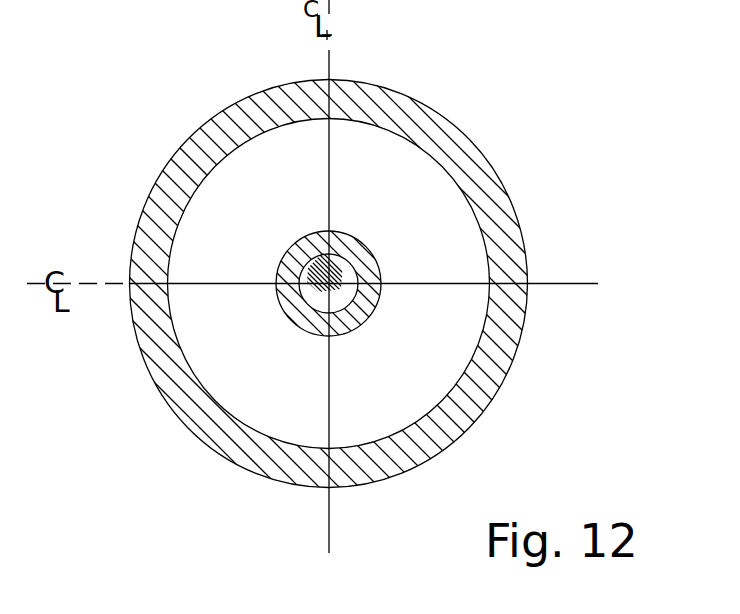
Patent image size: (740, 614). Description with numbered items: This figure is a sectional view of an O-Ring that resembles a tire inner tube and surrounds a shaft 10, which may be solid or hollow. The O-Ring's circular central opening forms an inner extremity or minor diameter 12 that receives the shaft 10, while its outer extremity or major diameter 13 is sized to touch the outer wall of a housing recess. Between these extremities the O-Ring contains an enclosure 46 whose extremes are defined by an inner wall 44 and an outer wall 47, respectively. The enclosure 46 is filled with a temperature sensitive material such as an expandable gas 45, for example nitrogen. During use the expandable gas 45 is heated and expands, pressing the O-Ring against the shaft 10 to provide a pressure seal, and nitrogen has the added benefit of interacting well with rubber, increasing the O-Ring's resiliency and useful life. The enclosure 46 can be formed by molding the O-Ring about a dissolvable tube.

The shaft 10 is at (310, 260).
The minor diameter 12 is at (303, 307).
The major diameter 13 is at (325, 79).
The inner wall 44 is at (367, 253).
The expandable gas 45 is at (390, 194).
The enclosure 46 is at (410, 352).
The outer wall 47 is at (468, 163).